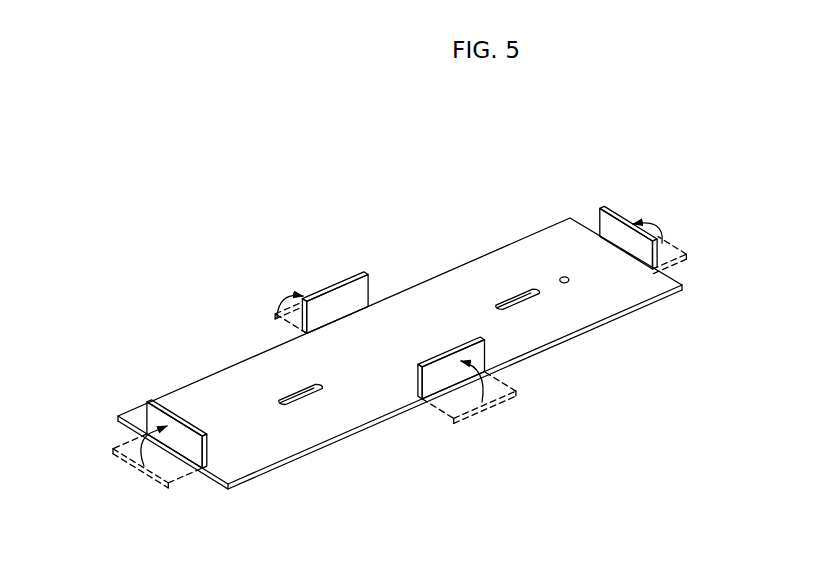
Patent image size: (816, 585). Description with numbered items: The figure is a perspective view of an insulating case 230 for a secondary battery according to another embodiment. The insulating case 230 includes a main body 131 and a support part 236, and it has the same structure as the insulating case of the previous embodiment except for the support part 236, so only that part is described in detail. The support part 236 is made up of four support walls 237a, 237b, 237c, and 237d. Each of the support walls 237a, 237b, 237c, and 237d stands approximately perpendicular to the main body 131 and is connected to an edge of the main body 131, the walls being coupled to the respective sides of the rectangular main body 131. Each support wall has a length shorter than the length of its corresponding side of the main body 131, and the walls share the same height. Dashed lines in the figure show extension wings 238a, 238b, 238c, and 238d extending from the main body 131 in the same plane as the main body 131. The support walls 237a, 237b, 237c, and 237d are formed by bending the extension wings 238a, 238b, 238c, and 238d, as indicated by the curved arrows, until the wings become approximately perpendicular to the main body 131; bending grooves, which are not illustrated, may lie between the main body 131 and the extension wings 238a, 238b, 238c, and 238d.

The insulating case 230 is at (82, 329).
The main body 131 is at (577, 311).
The support part 236 is at (460, 167).
The support wall 237a is at (472, 343).
The support wall 237b is at (598, 210).
The support wall 237c is at (348, 279).
The support wall 237d is at (148, 403).
The extension wing 238a is at (466, 403).
The extension wing 238b is at (684, 252).
The extension wing 238c is at (284, 314).
The extension wing 238d is at (160, 476).